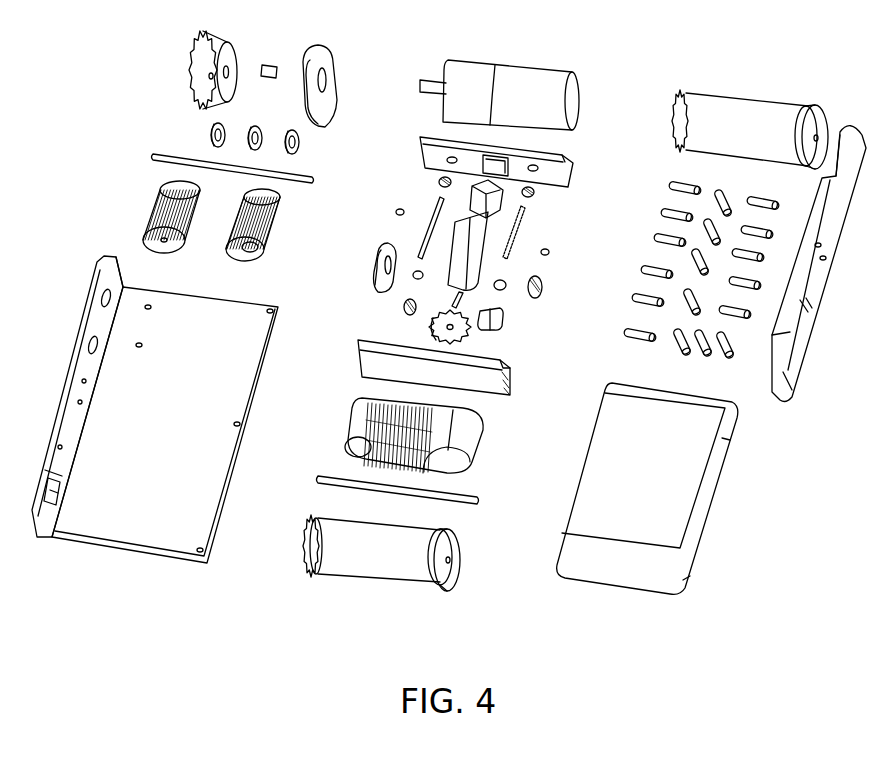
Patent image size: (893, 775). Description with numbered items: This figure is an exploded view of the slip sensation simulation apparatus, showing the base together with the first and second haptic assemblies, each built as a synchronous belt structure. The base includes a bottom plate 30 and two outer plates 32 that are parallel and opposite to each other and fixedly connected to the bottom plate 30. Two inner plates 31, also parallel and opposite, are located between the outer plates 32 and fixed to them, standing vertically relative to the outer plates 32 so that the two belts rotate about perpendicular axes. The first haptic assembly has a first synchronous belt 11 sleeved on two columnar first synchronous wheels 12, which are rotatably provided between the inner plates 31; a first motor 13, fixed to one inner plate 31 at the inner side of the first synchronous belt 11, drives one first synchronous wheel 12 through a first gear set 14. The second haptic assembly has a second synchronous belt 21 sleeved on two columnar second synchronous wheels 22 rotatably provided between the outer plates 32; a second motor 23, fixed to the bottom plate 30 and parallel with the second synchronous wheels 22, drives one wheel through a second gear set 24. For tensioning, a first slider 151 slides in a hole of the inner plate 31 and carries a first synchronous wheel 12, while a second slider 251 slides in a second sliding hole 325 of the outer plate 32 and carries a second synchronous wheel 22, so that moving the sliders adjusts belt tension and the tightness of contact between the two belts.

The first synchronous belt 11 is at (458, 435).
The first synchronous wheel 12 is at (273, 233).
The first motor 13 is at (480, 245).
The first gear set 14 is at (462, 333).
The first slider 151 is at (498, 318).
The second synchronous belt 21 is at (597, 498).
The second synchronous wheel 22 is at (685, 123).
The second motor 23 is at (533, 97).
The second gear set 24 is at (212, 73).
The second slider 251 is at (380, 277).
The bottom plate 30 is at (212, 424).
The inner plate 31 is at (548, 168).
The outer plate 32 is at (68, 438).
The second sliding hole 325 is at (52, 485).